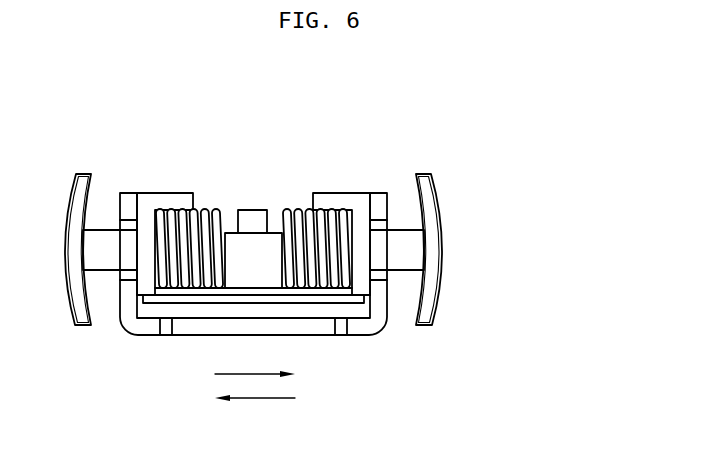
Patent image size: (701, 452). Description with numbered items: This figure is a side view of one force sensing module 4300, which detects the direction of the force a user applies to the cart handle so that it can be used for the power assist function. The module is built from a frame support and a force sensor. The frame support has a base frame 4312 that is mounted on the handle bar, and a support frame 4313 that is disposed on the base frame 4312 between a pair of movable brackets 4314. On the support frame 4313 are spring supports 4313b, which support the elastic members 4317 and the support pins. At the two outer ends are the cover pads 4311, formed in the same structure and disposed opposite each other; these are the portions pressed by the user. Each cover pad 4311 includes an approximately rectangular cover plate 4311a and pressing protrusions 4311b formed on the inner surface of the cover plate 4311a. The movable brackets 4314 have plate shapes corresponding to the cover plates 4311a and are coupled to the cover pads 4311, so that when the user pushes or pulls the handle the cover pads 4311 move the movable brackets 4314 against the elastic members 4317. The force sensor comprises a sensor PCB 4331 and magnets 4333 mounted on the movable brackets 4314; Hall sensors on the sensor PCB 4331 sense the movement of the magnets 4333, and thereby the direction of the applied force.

The force sensing module 4300 is at (93, 73).
The cover pad 4311 is at (543, 200).
The cover plate 4311a is at (427, 203).
The pressing protrusion 4311b is at (408, 247).
The base frame 4312 is at (133, 324).
The support frame 4313 is at (172, 310).
The spring support 4313b is at (250, 219).
The movable bracket 4314 is at (148, 206).
The elastic member 4317 is at (300, 210).
The sensor PCB 4331 is at (338, 296).
The magnet 4333 is at (342, 203).